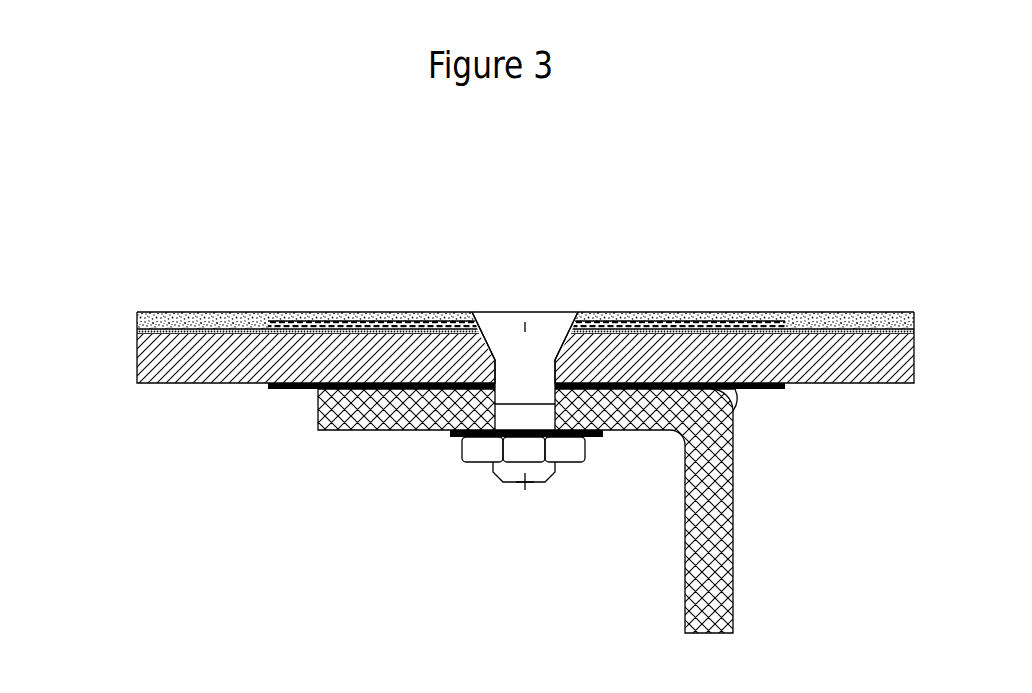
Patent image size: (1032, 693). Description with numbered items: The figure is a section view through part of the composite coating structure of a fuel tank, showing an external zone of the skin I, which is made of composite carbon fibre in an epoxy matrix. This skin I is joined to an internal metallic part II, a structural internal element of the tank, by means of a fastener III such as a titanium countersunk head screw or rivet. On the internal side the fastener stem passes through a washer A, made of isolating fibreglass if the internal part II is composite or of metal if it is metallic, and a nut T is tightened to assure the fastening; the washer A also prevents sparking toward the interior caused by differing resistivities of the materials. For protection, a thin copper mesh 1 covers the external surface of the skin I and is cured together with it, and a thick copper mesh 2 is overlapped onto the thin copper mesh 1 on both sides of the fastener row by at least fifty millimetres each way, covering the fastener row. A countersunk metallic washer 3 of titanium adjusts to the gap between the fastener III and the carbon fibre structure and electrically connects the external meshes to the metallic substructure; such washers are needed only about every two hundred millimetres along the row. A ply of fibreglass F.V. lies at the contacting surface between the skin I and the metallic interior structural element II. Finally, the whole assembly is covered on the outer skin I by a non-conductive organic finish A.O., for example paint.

The skin I is at (217, 365).
The internal metallic part II is at (717, 583).
The fastener III is at (507, 340).
The thin copper mesh 1 is at (850, 330).
The thick copper mesh 2 is at (305, 322).
The countersunk metallic washer 3 is at (526, 388).
The non-conductive organic finish A.O. is at (173, 320).
The ply of fibreglass F.V. is at (747, 390).
The washer A is at (450, 437).
The nut T is at (483, 452).